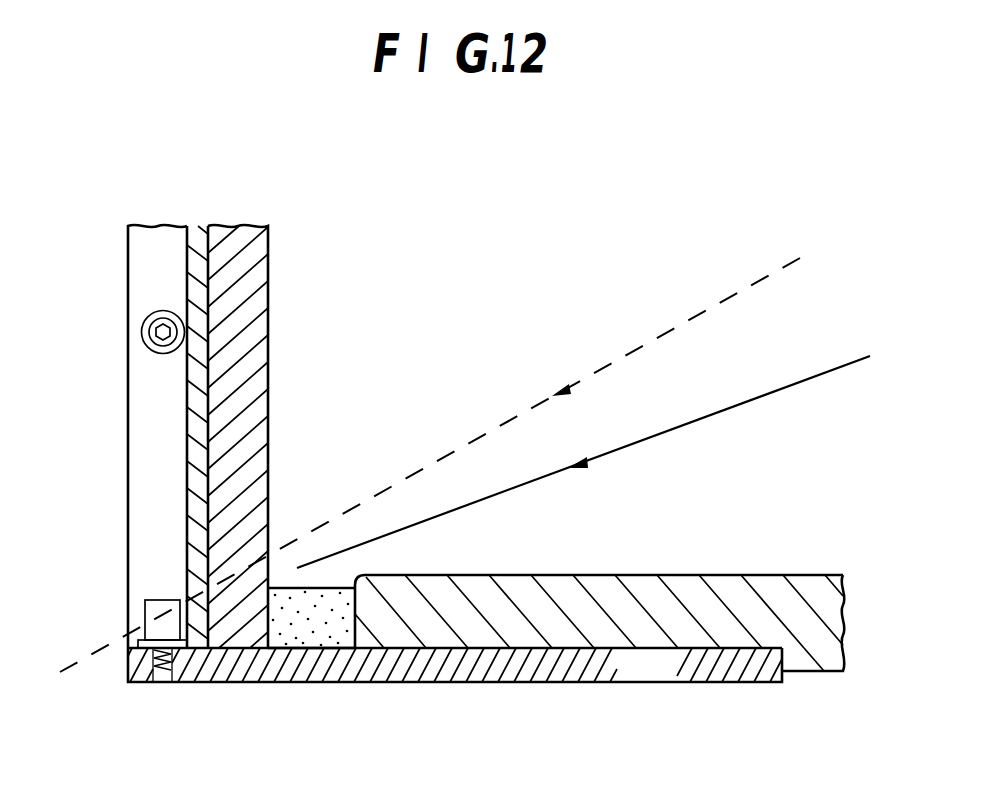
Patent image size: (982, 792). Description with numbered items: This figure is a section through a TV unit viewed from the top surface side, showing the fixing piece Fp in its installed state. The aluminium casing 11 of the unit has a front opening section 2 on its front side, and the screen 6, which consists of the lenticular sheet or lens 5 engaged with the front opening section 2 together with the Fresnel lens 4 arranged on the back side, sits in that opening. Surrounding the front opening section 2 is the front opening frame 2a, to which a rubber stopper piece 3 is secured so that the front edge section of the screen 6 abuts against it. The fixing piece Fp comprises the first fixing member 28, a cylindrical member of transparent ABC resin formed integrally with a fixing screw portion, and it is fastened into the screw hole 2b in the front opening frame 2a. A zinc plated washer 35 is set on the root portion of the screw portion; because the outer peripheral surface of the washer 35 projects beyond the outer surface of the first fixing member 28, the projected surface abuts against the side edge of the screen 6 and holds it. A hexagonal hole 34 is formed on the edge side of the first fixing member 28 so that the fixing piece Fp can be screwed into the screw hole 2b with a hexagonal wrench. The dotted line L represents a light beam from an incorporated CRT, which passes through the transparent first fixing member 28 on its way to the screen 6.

The front opening section 2 is at (239, 681).
The front opening frame 2a is at (205, 684).
The screw hole 2b is at (162, 685).
The rubber stopper piece 3 is at (312, 588).
The Fresnel lens 4 is at (270, 345).
The lenticular sheet or lens 5 is at (200, 228).
The screen 6 is at (240, 230).
The casing 11 is at (825, 658).
The first fixing member 28 is at (150, 333).
The hexagonal hole 34 is at (160, 322).
The zinc plated washer 35 is at (165, 354).
The fixing piece Fp is at (167, 390).
The light beam L is at (592, 373).